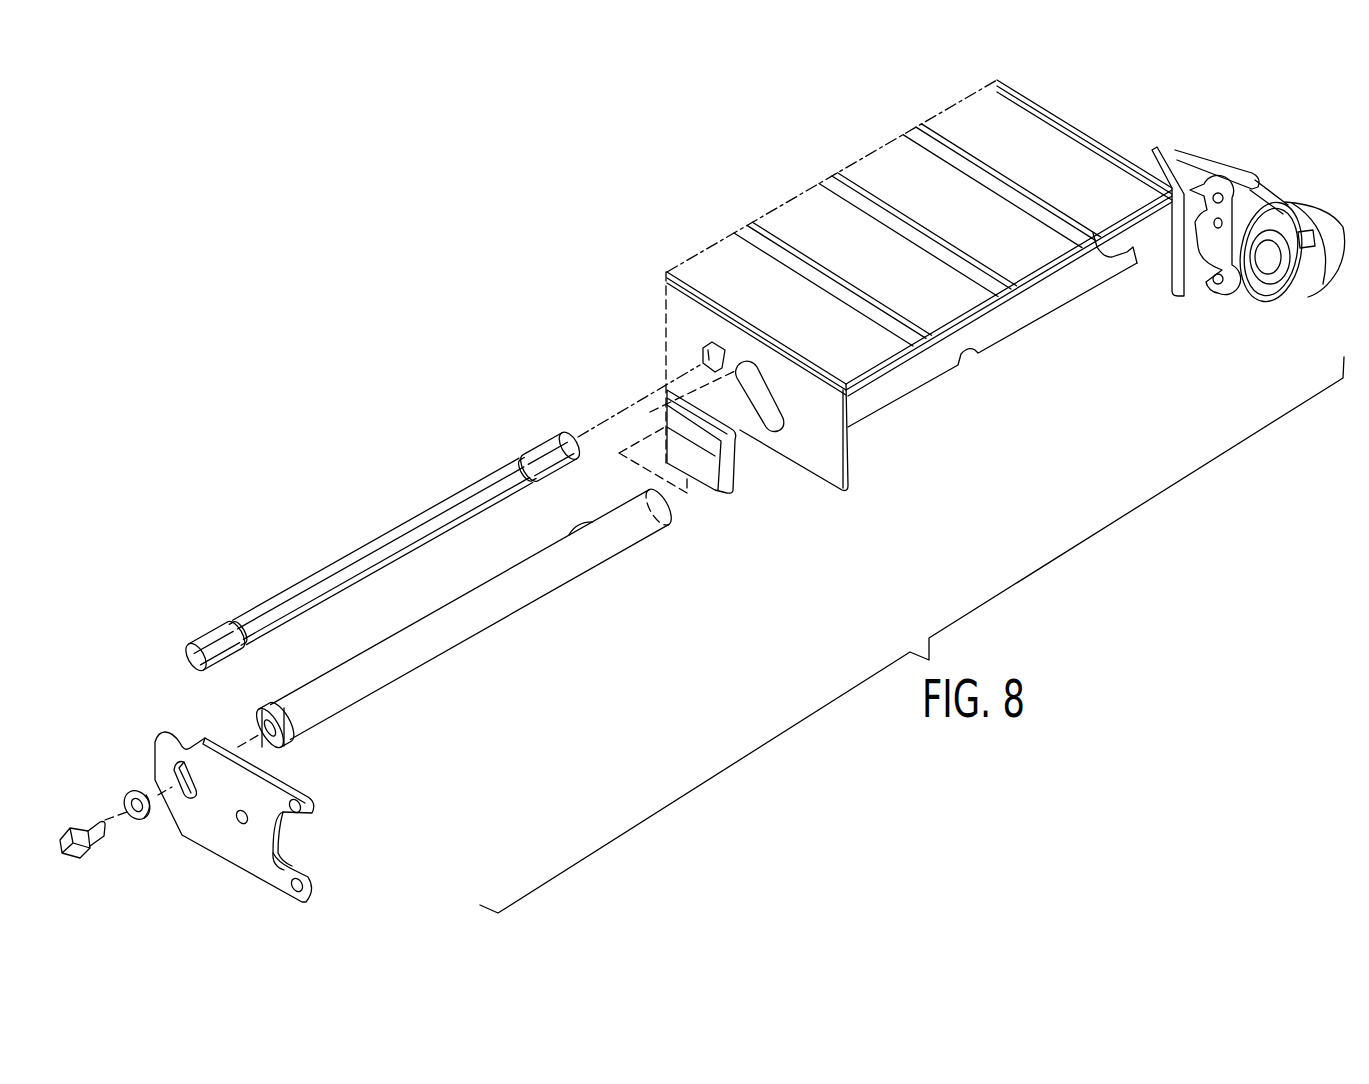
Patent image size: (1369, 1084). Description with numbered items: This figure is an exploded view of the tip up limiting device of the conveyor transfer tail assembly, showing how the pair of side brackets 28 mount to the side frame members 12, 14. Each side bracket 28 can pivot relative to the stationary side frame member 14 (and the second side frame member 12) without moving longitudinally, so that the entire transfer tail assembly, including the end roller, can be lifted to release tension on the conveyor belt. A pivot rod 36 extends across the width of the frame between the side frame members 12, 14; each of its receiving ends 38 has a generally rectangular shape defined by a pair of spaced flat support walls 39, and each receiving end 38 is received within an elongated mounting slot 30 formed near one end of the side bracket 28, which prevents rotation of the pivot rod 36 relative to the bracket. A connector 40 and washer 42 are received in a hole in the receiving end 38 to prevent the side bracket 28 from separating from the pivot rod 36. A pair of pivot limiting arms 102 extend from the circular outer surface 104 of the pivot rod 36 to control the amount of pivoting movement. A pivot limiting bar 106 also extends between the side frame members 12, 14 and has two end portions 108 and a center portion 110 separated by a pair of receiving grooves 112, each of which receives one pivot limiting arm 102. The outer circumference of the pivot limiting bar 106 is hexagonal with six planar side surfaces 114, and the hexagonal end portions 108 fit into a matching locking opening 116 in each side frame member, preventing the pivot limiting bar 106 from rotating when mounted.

The second side frame member 12 is at (1047, 105).
The side frame member 14 is at (810, 457).
The side bracket 28 is at (225, 843).
The mounting slot 30 is at (173, 775).
The pivot rod 36 is at (439, 627).
The receiving end 38 is at (265, 720).
The flat support walls 39 is at (297, 737).
The connector 40 is at (90, 828).
The washer 42 is at (142, 818).
The pivot limiting arms 102 is at (455, 635).
The circular outer surface 104 is at (463, 617).
The pivot limiting bar 106 is at (351, 521).
The end portions 108 is at (383, 551).
The center portion 110 is at (383, 551).
The receiving grooves 112 is at (382, 551).
The planar side surfaces 114 is at (370, 529).
The locking opening 116 is at (700, 352).